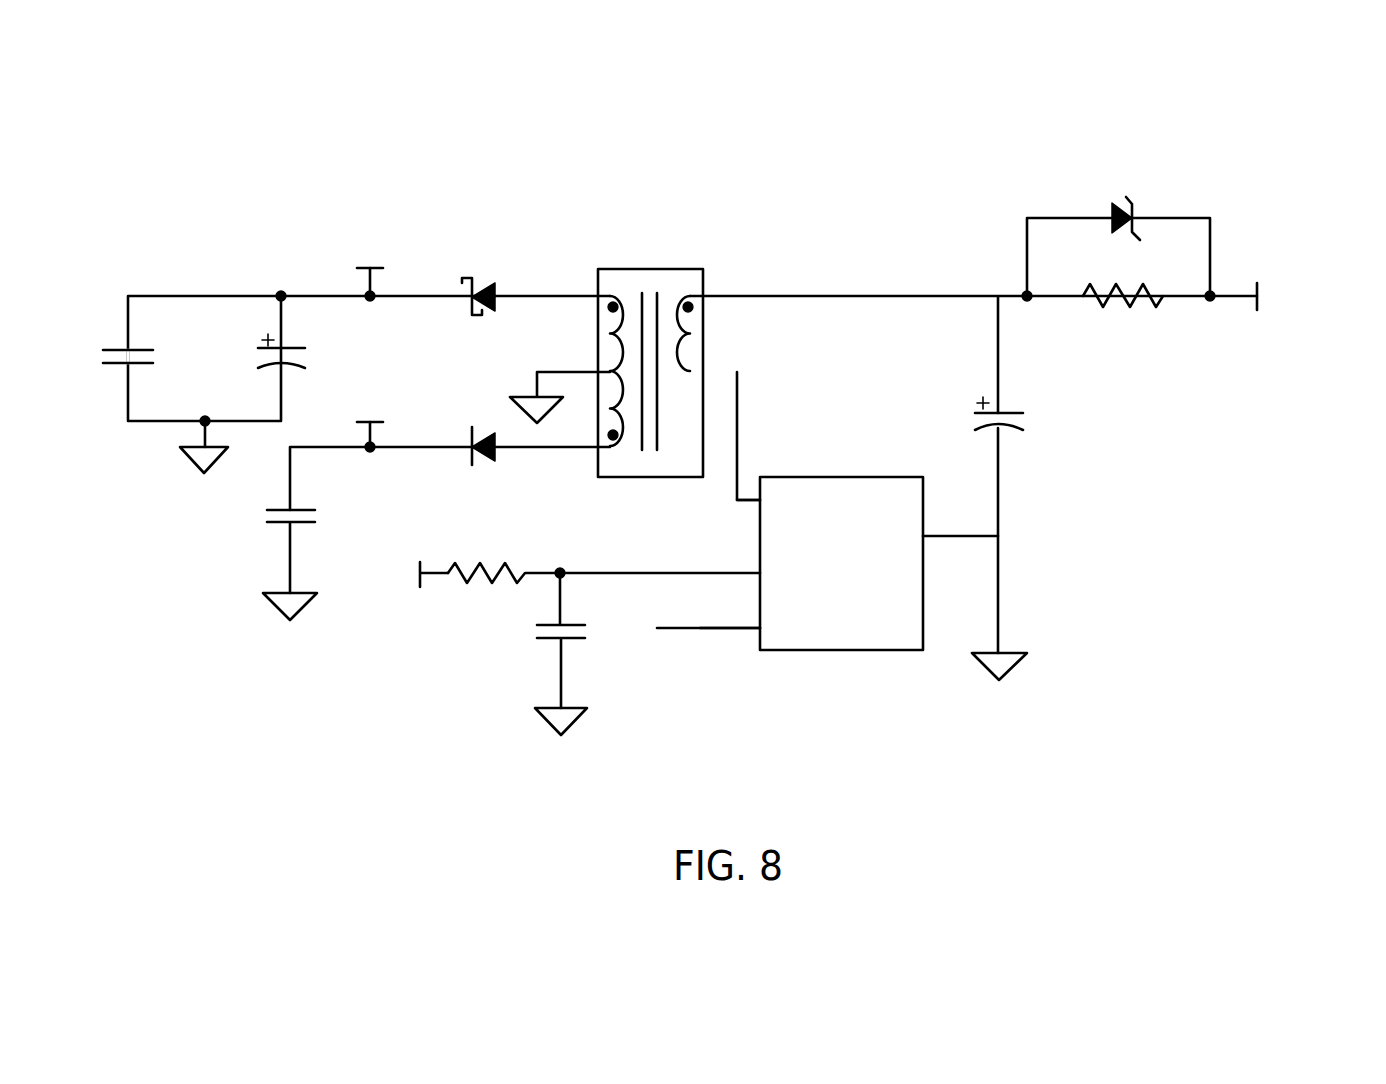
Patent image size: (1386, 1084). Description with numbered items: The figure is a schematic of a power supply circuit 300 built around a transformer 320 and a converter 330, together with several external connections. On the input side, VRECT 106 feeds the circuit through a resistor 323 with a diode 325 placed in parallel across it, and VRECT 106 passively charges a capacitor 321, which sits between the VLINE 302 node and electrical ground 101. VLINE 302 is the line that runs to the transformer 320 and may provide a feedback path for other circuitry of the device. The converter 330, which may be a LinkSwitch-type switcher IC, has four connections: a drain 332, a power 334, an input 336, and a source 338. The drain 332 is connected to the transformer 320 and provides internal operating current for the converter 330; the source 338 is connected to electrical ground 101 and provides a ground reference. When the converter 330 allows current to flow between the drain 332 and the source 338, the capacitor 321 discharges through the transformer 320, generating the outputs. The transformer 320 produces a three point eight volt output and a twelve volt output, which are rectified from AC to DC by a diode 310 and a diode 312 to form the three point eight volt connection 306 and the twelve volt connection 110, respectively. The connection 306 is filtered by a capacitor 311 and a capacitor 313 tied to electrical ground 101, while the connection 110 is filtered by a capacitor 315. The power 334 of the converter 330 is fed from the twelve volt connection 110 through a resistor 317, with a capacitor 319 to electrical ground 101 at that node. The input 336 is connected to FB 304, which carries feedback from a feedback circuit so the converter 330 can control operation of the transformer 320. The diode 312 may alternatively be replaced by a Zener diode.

The power supply circuit 300 is at (327, 167).
The VLINE 302 is at (840, 264).
The FB 304 is at (652, 619).
The 3.8-volt connection 306 is at (352, 270).
The VRECT 106 is at (1300, 316).
The 12-volt connection 110 is at (372, 387).
The electrical ground 101 is at (193, 460).
The diode 310 is at (482, 285).
The capacitor 311 is at (137, 349).
The diode 312 is at (483, 460).
The capacitor 313 is at (290, 347).
The capacitor 315 is at (282, 525).
The resistor 317 is at (482, 584).
The capacitor 319 is at (548, 642).
The transformer 320 is at (640, 268).
The capacitor 321 is at (1010, 413).
The resistor 323 is at (1120, 299).
The diode 325 is at (1122, 202).
The converter 330 is at (800, 477).
The drain 332 is at (755, 506).
The power 334 is at (755, 565).
The input 336 is at (751, 634).
The source 338 is at (930, 542).